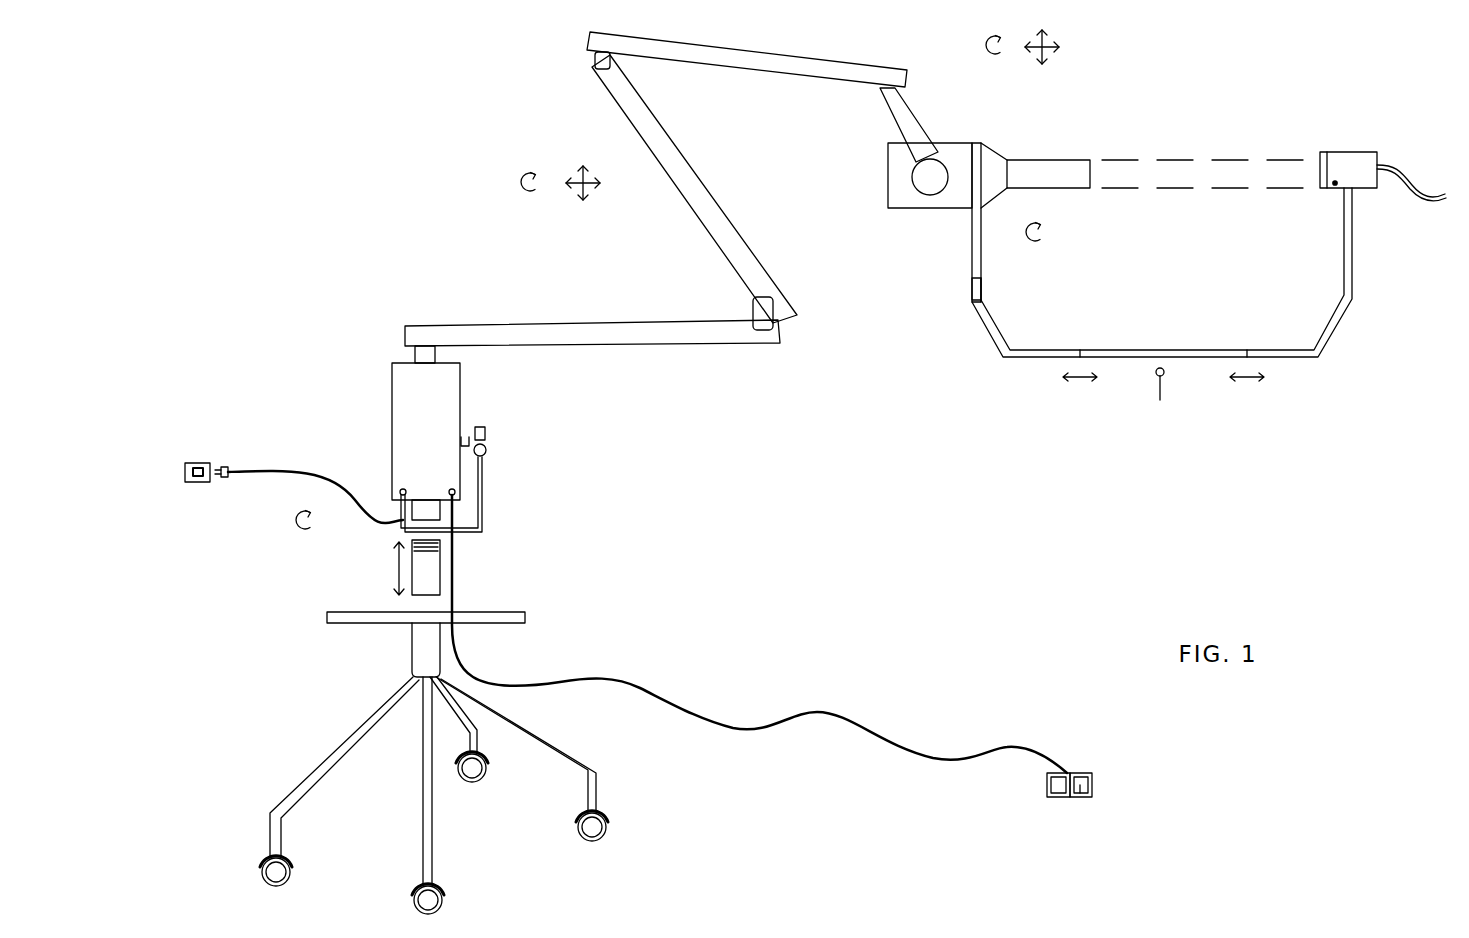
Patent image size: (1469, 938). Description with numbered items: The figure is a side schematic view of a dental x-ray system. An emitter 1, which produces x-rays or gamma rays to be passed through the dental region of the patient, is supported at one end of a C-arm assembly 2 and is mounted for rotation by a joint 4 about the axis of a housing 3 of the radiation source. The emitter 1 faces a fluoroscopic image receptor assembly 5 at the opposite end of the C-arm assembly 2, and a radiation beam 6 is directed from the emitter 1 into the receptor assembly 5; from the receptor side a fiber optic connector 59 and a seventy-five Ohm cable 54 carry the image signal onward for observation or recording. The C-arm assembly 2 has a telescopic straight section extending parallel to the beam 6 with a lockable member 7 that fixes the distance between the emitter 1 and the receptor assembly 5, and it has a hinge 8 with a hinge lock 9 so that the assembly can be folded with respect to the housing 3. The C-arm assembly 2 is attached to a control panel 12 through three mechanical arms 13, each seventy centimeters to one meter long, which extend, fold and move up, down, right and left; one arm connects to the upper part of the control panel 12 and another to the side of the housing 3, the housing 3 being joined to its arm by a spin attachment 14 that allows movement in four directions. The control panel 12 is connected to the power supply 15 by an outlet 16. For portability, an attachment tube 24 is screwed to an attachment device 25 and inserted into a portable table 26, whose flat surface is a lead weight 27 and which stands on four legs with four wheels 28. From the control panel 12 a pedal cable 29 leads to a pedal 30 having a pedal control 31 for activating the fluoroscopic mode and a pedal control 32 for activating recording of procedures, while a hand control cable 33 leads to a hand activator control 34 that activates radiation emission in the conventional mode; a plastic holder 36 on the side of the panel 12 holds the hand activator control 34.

The emitter 1 is at (1061, 169).
The C-arm assembly 2 is at (997, 340).
The housing 3 is at (962, 160).
The joint 4 is at (977, 188).
The fluoroscopic image receptor assembly 5 is at (1340, 155).
The radiation beam 6 is at (1178, 173).
The lockable member 7 is at (1160, 400).
The hinge 8 is at (972, 290).
The hinge lock 9 is at (987, 292).
The control panel 12 is at (392, 410).
The mechanical arms 13 is at (658, 162).
The spin attachment 14 is at (935, 170).
The power supply 15 is at (234, 464).
The outlet 16 is at (200, 462).
The attachment tube 24 is at (411, 518).
The attachment device 25 is at (412, 568).
The portable table 26 is at (527, 614).
The lead weight 27 is at (360, 620).
The wheels 28 is at (596, 792).
The pedal cable 29 is at (700, 718).
The pedal 30 is at (1095, 785).
The pedal control 31 is at (1047, 785).
The pedal control 32 is at (1080, 800).
The hand control cable 33 is at (486, 522).
The hand activator control 34 is at (488, 447).
The plastic holder 36 is at (470, 430).
The 75 Ohm cable 54 is at (1418, 198).
The fiber optic connector 59 is at (1333, 186).